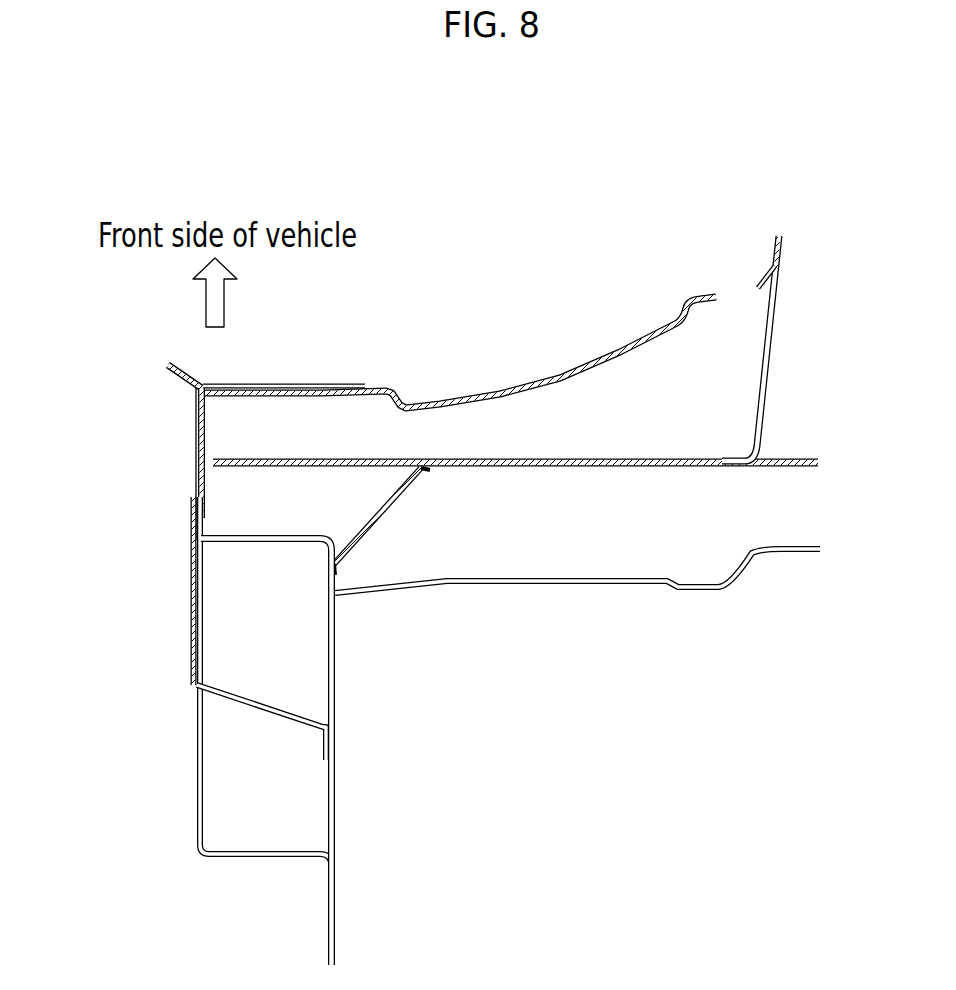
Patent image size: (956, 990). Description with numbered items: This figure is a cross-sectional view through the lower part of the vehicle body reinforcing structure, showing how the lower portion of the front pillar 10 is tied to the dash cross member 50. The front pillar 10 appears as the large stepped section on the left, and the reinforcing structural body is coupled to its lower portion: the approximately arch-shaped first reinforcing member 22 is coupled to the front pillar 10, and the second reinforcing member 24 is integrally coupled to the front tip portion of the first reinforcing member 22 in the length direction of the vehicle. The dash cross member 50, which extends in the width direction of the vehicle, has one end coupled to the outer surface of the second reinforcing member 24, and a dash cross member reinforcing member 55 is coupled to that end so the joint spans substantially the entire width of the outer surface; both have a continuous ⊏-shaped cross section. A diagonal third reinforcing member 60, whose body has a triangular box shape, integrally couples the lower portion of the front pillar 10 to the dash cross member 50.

The front pillar 10 is at (356, 726).
The first reinforcing member 22 is at (242, 718).
The second reinforcing member 24 is at (166, 416).
The dash cross member 50 is at (647, 469).
The dash cross member reinforcing member 55 is at (612, 353).
The third reinforcing member 60 is at (388, 503).